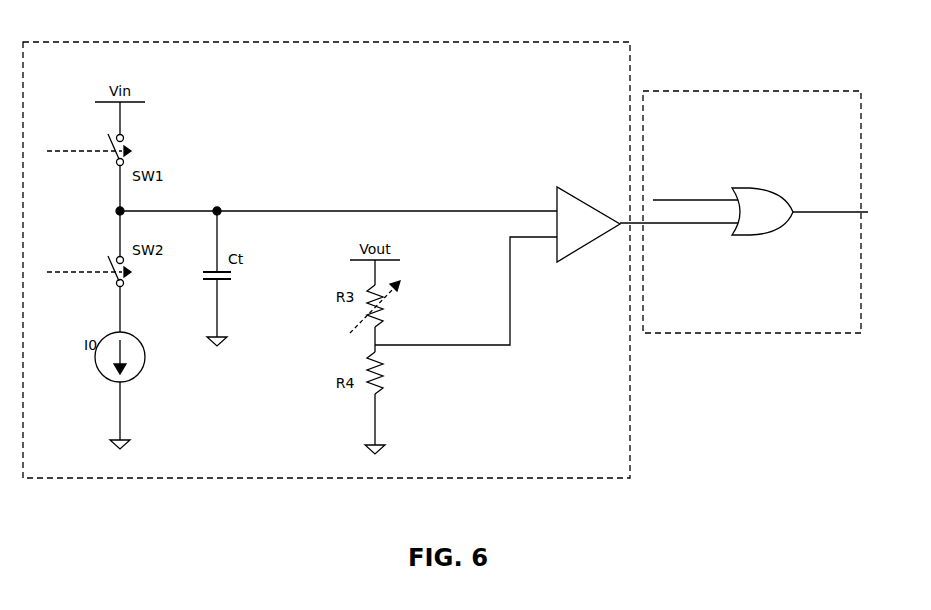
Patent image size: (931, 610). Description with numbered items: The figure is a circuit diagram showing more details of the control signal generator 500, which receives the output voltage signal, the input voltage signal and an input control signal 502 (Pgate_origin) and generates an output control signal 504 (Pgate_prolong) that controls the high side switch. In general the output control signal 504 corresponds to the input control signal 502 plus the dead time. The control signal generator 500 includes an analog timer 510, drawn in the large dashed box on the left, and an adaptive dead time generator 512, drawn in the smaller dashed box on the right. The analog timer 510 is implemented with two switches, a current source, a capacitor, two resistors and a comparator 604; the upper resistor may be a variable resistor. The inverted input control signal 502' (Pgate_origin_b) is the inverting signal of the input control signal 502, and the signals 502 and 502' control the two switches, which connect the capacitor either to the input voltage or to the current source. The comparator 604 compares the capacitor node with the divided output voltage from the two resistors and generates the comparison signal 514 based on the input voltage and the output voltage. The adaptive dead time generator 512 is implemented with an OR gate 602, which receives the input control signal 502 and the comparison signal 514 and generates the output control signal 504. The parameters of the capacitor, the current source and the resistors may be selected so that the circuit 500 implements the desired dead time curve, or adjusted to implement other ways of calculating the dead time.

The control signal generator 500 is at (798, 523).
The input control signal 502 is at (390, 134).
The input control signal 502' is at (86, 233).
The output control signal 504 is at (838, 210).
The analog timer 510 is at (316, 42).
The adaptive dead time generator 512 is at (725, 333).
The comparison signal 514 is at (680, 226).
The OR gate 602 is at (778, 196).
The comparator 604 is at (602, 205).